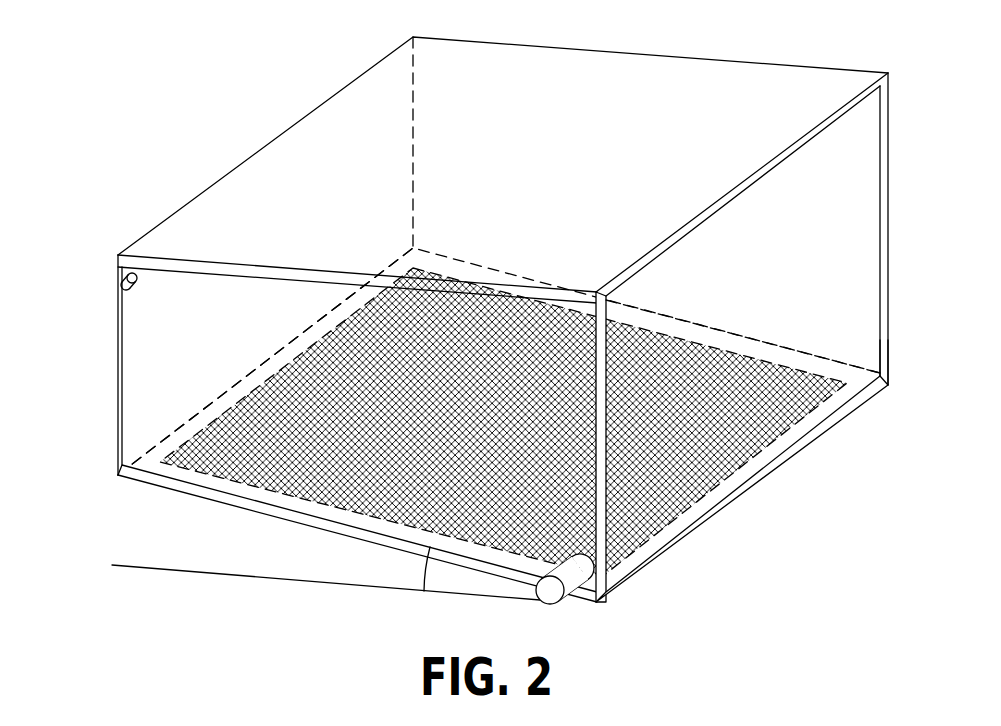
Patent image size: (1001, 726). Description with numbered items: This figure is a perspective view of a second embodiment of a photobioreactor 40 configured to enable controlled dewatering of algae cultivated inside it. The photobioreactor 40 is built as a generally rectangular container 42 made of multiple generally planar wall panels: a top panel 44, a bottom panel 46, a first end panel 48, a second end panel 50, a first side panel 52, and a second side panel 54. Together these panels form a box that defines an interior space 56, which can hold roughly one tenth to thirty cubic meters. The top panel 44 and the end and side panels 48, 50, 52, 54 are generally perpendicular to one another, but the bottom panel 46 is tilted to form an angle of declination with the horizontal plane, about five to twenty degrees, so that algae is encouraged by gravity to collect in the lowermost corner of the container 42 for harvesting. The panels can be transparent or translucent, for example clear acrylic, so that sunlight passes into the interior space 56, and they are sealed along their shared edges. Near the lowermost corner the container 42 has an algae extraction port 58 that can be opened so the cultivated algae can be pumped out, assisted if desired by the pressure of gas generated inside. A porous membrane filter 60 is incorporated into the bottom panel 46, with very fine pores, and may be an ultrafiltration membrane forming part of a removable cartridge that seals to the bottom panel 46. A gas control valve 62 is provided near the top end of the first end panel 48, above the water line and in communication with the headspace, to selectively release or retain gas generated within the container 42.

The photobioreactor 40 is at (168, 99).
The container 42 is at (143, 213).
The top panel 44 is at (843, 83).
The bottom panel 46 is at (695, 534).
The first end panel 48 is at (138, 417).
The second end panel 50 is at (890, 353).
The first side panel 52 is at (118, 322).
The second side panel 54 is at (860, 265).
The interior space 56 is at (850, 322).
The algae extraction port 58 is at (572, 584).
The porous membrane filter 60 is at (295, 387).
The gas control valve 62 is at (133, 282).